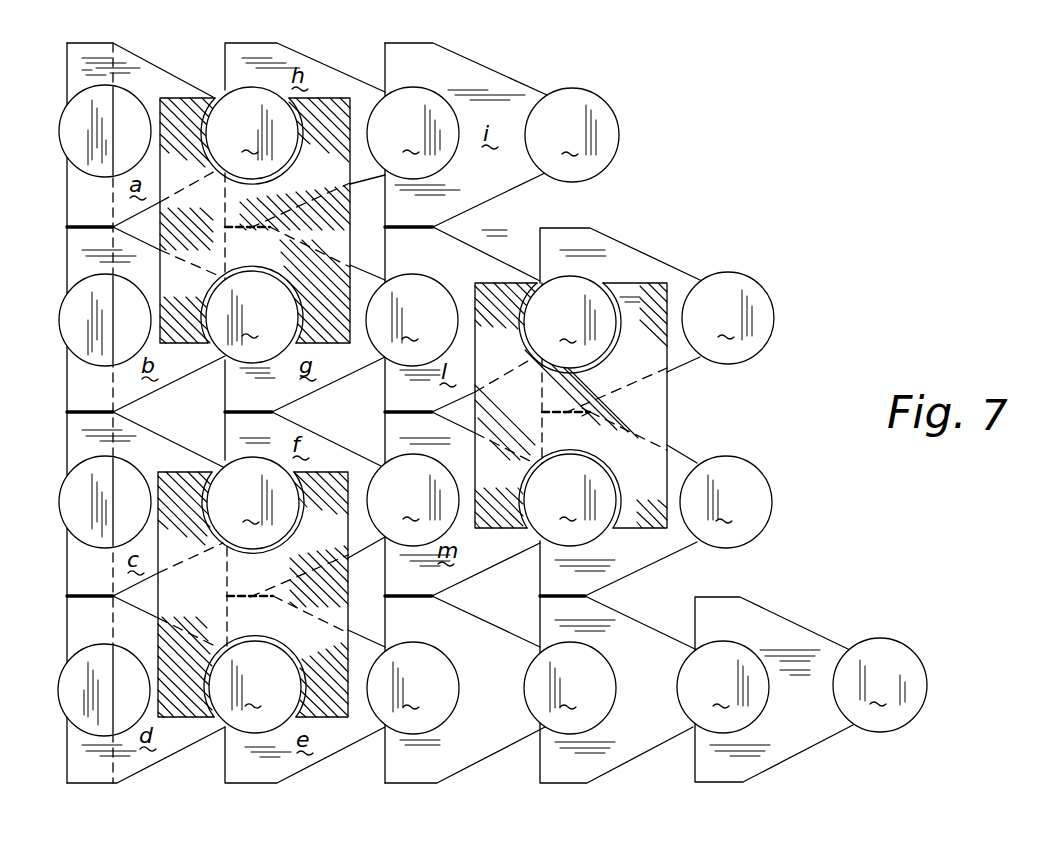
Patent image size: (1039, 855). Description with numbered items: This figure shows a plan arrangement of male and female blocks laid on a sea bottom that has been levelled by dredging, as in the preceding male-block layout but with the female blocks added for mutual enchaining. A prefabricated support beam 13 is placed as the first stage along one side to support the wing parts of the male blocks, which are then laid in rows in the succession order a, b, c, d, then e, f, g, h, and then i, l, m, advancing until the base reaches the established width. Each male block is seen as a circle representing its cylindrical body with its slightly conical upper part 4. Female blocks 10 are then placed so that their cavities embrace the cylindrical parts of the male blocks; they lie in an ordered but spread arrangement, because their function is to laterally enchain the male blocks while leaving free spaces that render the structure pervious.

The upper part 4 is at (492, 410).
The female block 10 is at (329, 113).
The prefabricated support beam 13 is at (83, 325).